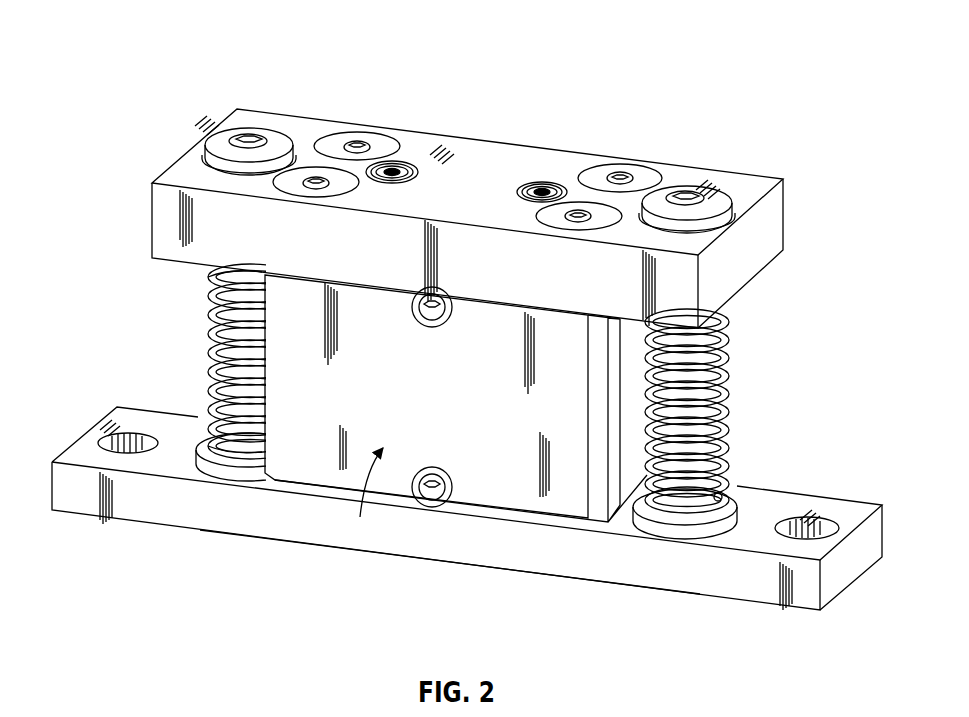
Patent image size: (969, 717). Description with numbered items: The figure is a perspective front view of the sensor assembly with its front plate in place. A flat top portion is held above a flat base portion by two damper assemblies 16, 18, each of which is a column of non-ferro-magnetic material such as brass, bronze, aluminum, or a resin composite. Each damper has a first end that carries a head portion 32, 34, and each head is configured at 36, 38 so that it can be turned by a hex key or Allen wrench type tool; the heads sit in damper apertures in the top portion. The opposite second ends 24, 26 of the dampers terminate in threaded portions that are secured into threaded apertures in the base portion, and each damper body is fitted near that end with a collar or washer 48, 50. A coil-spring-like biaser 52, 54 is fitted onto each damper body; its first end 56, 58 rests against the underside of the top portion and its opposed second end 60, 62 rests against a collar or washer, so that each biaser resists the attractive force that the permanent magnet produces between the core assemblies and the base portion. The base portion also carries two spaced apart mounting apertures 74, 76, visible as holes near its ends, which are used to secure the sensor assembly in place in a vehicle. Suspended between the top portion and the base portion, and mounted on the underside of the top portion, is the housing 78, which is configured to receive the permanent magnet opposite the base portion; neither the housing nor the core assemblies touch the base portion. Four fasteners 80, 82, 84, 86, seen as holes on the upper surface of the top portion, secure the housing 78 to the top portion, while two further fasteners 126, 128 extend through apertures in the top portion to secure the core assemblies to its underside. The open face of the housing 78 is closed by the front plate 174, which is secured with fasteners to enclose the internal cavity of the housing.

The damper assembly 16 is at (724, 424).
The damper assembly 18 is at (211, 421).
The second end 24 is at (235, 482).
The second end 26 is at (688, 538).
The head portion 32 is at (275, 138).
The head portion 34 is at (715, 197).
The tool-engaging configuration 36 is at (243, 140).
The tool-engaging configuration 38 is at (687, 197).
The collar or washer 48 is at (217, 465).
The collar or washer 50 is at (732, 490).
The biaser 52 is at (207, 315).
The biaser 54 is at (727, 360).
The first end 56 is at (700, 328).
The first end 58 is at (210, 273).
The second end 60 is at (210, 430).
The second end 62 is at (727, 490).
The mounting aperture 74 is at (820, 522).
The mounting aperture 76 is at (107, 437).
The housing 78 is at (366, 497).
The fastener 80 is at (610, 172).
The fastener 82 is at (303, 173).
The fastener 84 is at (370, 138).
The fastener 86 is at (575, 207).
The fastener 126 is at (397, 168).
The fastener 128 is at (543, 185).
The front plate 174 is at (458, 412).